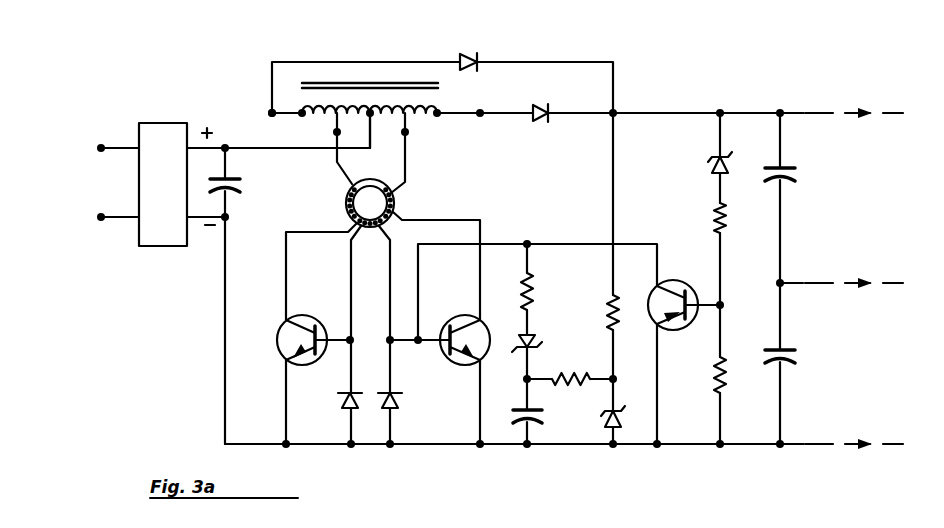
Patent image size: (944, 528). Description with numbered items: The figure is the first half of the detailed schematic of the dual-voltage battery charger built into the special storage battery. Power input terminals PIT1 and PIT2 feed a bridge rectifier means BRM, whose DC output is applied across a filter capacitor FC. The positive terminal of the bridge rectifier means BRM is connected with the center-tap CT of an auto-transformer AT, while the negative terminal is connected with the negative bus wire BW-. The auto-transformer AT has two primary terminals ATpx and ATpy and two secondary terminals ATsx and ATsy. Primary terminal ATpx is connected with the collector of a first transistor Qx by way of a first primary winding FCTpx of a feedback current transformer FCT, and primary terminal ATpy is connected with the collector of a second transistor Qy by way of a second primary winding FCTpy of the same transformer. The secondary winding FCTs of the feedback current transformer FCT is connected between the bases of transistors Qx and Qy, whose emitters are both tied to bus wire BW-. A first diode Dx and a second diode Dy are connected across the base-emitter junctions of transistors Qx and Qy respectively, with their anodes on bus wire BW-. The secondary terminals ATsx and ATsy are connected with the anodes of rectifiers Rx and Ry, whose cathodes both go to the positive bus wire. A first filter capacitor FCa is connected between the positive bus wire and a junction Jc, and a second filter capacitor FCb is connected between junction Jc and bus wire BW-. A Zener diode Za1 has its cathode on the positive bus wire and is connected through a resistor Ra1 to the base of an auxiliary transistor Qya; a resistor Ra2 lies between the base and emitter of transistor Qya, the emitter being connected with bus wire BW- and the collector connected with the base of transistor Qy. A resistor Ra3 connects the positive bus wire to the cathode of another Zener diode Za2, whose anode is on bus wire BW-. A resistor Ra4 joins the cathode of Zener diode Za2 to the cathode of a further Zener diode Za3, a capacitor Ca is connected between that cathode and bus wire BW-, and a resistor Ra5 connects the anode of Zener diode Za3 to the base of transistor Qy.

The power input terminal PIT1 is at (103, 145).
The power input terminal PIT2 is at (101, 220).
The bridge rectifier means BRM is at (163, 184).
The filter capacitor FC is at (218, 192).
The auto-transformer AT is at (361, 76).
The secondary terminal ATsx is at (268, 113).
The secondary terminal ATsy is at (482, 109).
The primary terminal ATpx is at (333, 133).
The primary terminal ATpy is at (409, 134).
The center-tap CT is at (374, 118).
The rectifier Rx is at (477, 60).
The rectifier Ry is at (540, 120).
The negative bus wire BW- is at (690, 446).
The Zener diode Za1 is at (714, 155).
The resistor Ra1 is at (714, 210).
The resistor Ra2 is at (714, 388).
The resistor Ra3 is at (616, 296).
The resistor Ra4 is at (581, 375).
The resistor Ra5 is at (534, 291).
The first filter capacitor FCa is at (773, 167).
The second filter capacitor FCb is at (773, 350).
The junction Jc is at (777, 283).
The Zener diode Za2 is at (605, 426).
The Zener diode Za3 is at (535, 340).
The capacitor Ca is at (520, 424).
The first transistor Qx is at (278, 332).
The second transistor Qy is at (452, 325).
The auxiliary transistor Qya is at (684, 331).
The first diode Dx is at (344, 408).
The second diode Dy is at (396, 407).
The feedback current transformer FCT is at (343, 209).
The first primary winding FCTpx is at (346, 201).
The second primary winding FCTpy is at (396, 206).
The secondary winding FCTs is at (365, 232).